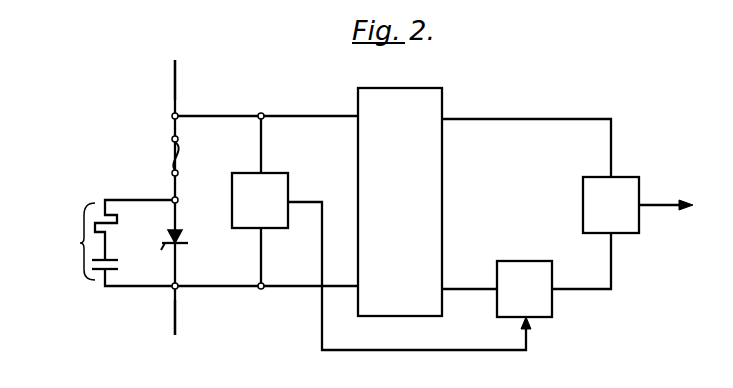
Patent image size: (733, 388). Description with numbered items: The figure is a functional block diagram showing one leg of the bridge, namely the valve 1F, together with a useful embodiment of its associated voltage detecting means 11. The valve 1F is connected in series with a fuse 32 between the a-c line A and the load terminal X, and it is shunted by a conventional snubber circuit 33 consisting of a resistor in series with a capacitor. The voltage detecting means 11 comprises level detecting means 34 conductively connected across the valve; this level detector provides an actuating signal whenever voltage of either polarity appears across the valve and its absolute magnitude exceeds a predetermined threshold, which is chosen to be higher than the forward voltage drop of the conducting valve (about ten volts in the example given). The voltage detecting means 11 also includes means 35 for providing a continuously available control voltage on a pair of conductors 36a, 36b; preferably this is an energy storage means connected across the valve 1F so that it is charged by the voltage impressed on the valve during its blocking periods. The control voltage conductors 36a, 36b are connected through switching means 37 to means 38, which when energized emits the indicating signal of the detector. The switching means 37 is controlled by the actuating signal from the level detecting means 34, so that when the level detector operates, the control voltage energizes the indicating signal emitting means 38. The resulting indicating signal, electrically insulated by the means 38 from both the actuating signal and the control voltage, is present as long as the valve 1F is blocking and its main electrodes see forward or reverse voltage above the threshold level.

The a-c line A is at (175, 84).
The fuse 32 is at (172, 153).
The snubber circuit 33 is at (80, 243).
The valve 1F is at (186, 240).
The load terminal X is at (172, 322).
The level detecting means 34 is at (381, 231).
The control voltage providing means 35 is at (400, 202).
The control voltage conductor 36a is at (510, 118).
The control voltage conductor 36b is at (467, 287).
The switching means 37 is at (554, 275).
The indicating signal emitting means 38 is at (638, 205).
The voltage detecting means 11 is at (293, 337).